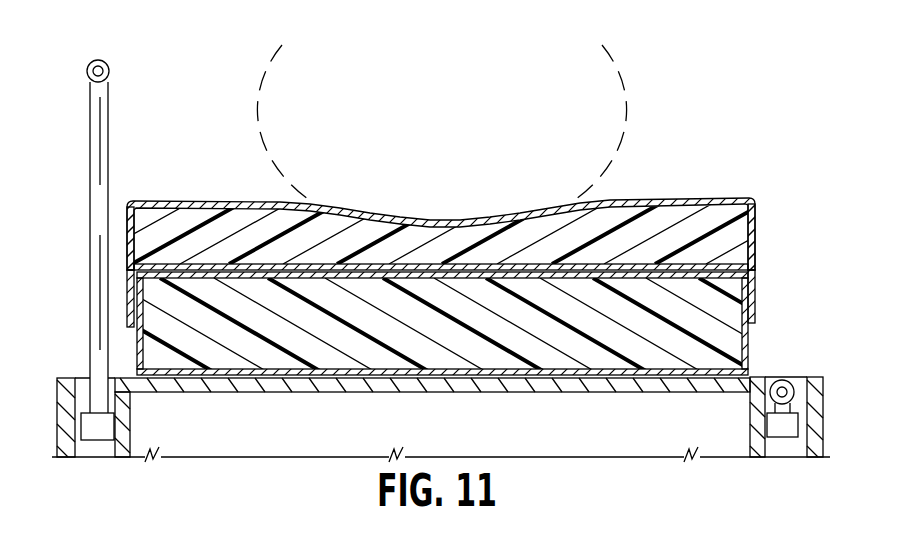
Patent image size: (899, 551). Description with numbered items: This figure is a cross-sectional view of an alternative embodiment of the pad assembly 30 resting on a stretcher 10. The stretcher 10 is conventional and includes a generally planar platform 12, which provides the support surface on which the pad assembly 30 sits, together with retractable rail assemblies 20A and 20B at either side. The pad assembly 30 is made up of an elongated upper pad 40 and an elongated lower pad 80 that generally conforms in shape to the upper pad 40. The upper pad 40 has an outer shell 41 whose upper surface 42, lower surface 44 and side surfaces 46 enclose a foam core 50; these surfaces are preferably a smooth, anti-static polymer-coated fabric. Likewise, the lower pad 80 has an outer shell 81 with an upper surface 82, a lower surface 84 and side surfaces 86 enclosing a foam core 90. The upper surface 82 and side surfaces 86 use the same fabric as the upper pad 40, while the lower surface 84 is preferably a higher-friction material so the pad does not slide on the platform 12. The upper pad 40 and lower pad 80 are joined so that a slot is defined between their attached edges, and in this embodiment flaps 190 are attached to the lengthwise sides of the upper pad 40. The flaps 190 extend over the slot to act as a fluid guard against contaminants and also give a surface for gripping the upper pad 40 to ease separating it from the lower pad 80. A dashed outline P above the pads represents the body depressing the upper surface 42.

The stretcher 10 is at (832, 388).
The platform 12 is at (597, 382).
The retractable rail assembly 20A is at (93, 60).
The retractable rail assembly 20B is at (792, 377).
The pad assembly 30 is at (668, 172).
The upper pad 40 is at (712, 187).
The outer shell 41 is at (755, 222).
The upper surface 42 is at (192, 200).
The lower surface 44 is at (470, 280).
The side surfaces 46 is at (128, 230).
The foam core 50 is at (553, 222).
The lower pad 80 is at (127, 340).
The outer shell 81 is at (750, 338).
The upper surface 82 is at (258, 267).
The lower surface 84 is at (258, 378).
The side surfaces 86 is at (133, 367).
The foam core 90 is at (342, 355).
The flaps 190 is at (128, 292).
The patient P is at (630, 94).